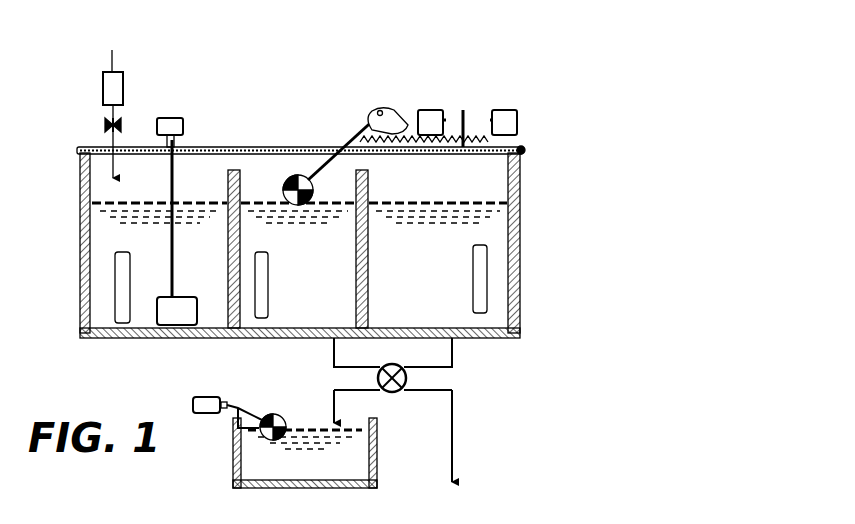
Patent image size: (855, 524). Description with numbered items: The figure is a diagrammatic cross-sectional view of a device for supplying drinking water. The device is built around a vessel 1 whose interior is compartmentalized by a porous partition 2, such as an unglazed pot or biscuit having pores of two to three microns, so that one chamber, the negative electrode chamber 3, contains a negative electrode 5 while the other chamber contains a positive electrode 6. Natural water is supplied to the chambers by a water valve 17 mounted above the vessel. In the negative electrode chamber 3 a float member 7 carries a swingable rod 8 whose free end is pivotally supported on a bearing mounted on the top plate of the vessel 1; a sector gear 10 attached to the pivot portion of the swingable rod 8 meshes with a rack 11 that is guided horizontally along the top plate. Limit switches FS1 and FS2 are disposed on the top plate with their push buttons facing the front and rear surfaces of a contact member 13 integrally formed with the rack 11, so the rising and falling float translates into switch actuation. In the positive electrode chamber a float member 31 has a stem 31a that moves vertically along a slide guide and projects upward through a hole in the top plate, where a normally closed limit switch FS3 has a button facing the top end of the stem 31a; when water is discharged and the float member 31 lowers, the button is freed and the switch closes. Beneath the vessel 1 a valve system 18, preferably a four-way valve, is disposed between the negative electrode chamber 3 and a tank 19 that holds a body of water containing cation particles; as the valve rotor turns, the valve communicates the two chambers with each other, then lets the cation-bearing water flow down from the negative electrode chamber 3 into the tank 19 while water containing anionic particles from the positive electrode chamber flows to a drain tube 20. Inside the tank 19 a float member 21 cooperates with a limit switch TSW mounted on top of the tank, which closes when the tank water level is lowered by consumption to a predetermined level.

The vessel 1 is at (520, 220).
The porous partition 2 is at (368, 272).
The negative electrode chamber 3 is at (331, 293).
The negative electrode 5 is at (262, 283).
The positive electrode 6 is at (130, 270).
The float member 7 is at (284, 188).
The swingable rod 8 is at (340, 145).
The sector gear 10 is at (376, 122).
The rack 11 is at (423, 146).
The contact member 13 is at (468, 106).
The water valve 17 is at (105, 126).
The valve system 18 is at (387, 393).
The tank 19 is at (378, 462).
The drain tube 20 is at (454, 435).
The float member 21 is at (282, 411).
The float member 31 is at (185, 297).
The stem 31a is at (174, 185).
The limit switch FS1 is at (505, 110).
The limit switch FS2 is at (432, 110).
The limit switch FS3 is at (173, 123).
The limit switch TSW is at (227, 402).